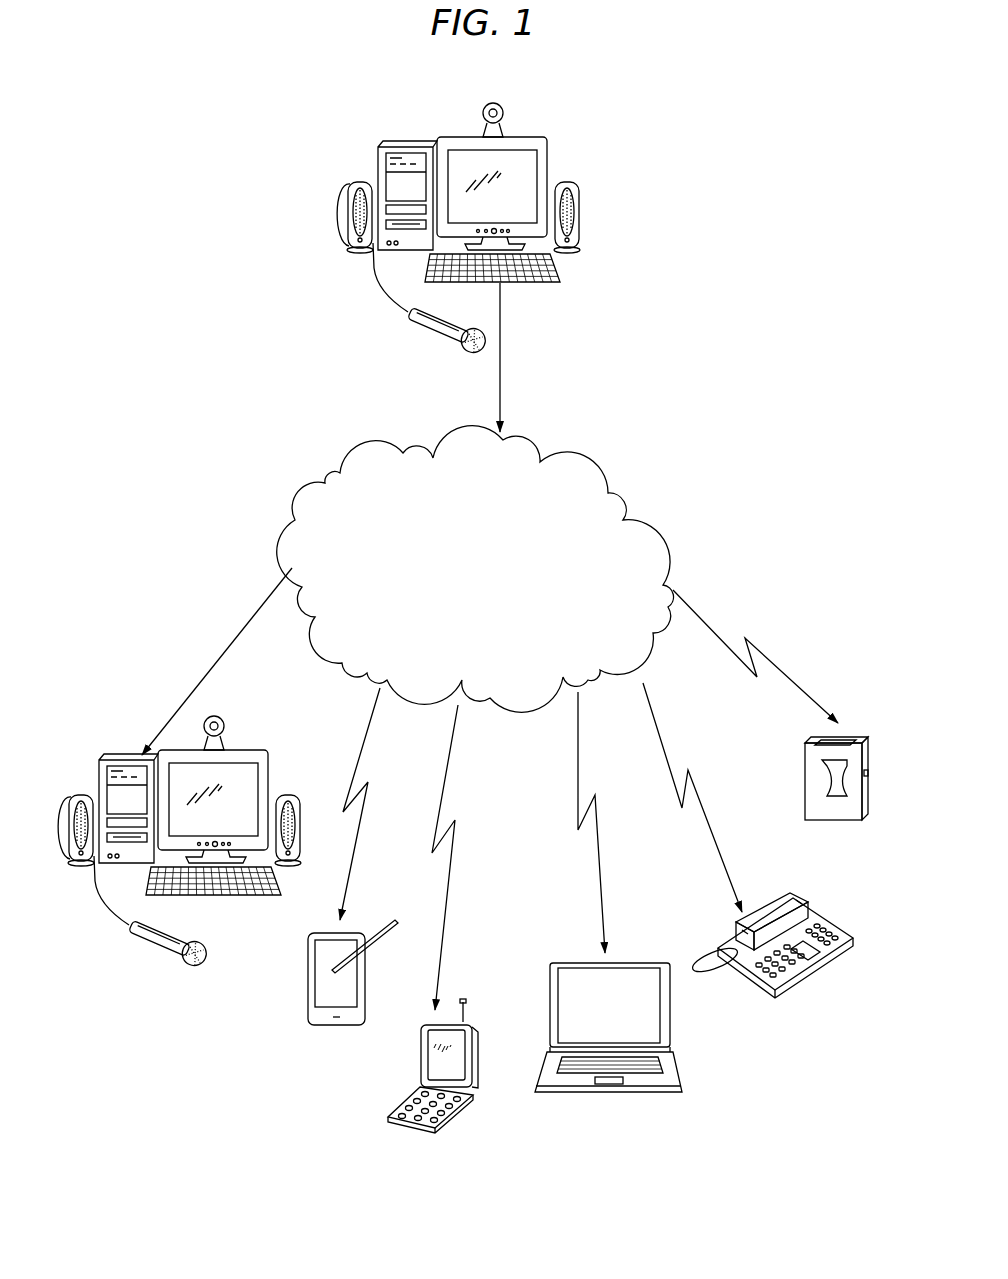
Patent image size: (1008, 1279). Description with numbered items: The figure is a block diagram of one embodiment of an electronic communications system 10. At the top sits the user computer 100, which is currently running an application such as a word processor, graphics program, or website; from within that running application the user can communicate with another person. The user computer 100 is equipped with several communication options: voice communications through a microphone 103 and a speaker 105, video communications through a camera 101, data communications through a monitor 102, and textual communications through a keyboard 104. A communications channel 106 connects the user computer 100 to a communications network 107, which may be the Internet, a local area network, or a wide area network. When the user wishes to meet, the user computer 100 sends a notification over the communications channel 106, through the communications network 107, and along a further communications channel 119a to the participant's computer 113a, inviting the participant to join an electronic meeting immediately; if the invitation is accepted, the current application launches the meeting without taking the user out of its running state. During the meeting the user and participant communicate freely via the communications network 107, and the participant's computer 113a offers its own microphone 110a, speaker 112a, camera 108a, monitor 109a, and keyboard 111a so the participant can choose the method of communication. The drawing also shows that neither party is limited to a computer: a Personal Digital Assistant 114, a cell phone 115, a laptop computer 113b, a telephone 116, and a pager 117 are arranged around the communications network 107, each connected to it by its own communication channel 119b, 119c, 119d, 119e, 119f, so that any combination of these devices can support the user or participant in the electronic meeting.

The electronic communications system 10 is at (188, 308).
The user computer 100 is at (322, 146).
The camera 101 is at (503, 110).
The monitor 102 is at (530, 158).
The microphone 103 is at (437, 333).
The keyboard 104 is at (563, 267).
The speaker 105 is at (581, 213).
The communications channel 106 is at (503, 369).
The communications network 107 is at (489, 631).
The camera 108a is at (255, 727).
The monitor 109a is at (257, 806).
The microphone 110a is at (137, 915).
The keyboard 111a is at (223, 897).
The speaker 112a is at (179, 790).
The participant's computer 113a is at (157, 677).
The laptop computer 113b is at (653, 1101).
The Personal Digital Assistant (PDA) 114 is at (308, 1000).
The cell phone 115 is at (403, 1103).
The telephone 116 is at (797, 988).
The pager 117 is at (805, 775).
The communications channel 119a is at (217, 661).
The communication channel 119b is at (383, 804).
The communication channel 119c is at (466, 857).
The communication channel 119d is at (608, 822).
The communication channel 119e is at (692, 797).
The communication channel 119f is at (755, 656).